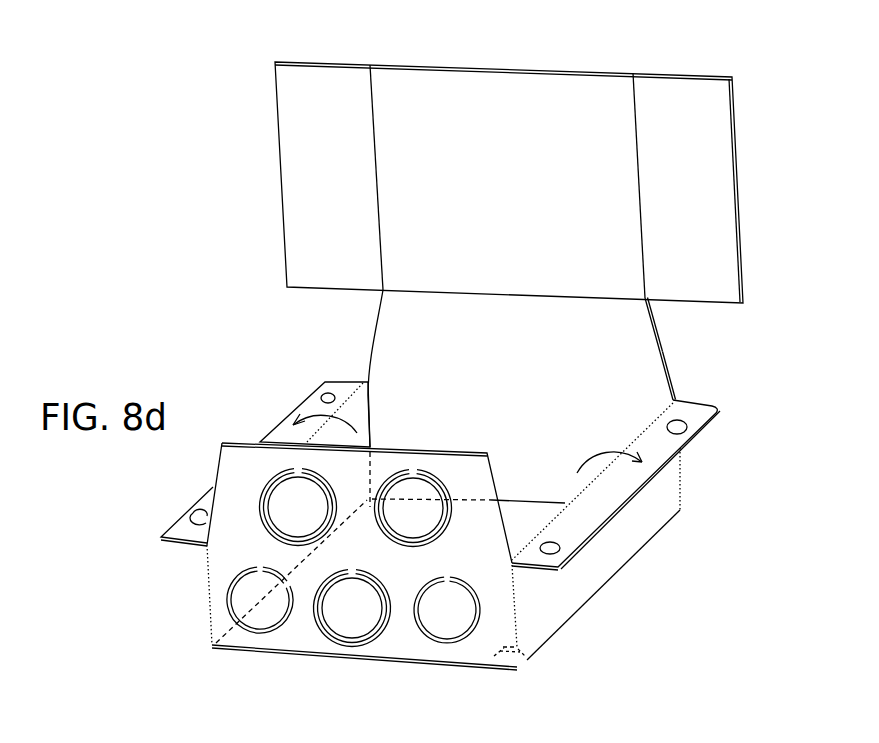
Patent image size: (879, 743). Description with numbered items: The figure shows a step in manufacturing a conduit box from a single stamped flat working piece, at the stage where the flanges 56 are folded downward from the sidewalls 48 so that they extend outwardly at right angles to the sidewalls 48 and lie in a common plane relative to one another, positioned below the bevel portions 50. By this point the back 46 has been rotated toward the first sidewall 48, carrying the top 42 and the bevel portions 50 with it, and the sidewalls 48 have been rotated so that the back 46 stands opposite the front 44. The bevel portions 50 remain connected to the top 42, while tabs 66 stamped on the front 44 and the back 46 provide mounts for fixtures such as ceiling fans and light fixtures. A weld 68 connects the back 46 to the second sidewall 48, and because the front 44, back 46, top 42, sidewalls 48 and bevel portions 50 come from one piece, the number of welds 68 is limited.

The top 42 is at (489, 240).
The front 44 is at (222, 587).
The back 46 is at (641, 334).
The sidewalls 48 is at (490, 452).
The bevel portions 50 is at (307, 218).
The flanges 56 is at (657, 392).
The tabs 66 is at (224, 456).
The welds 68 is at (368, 400).